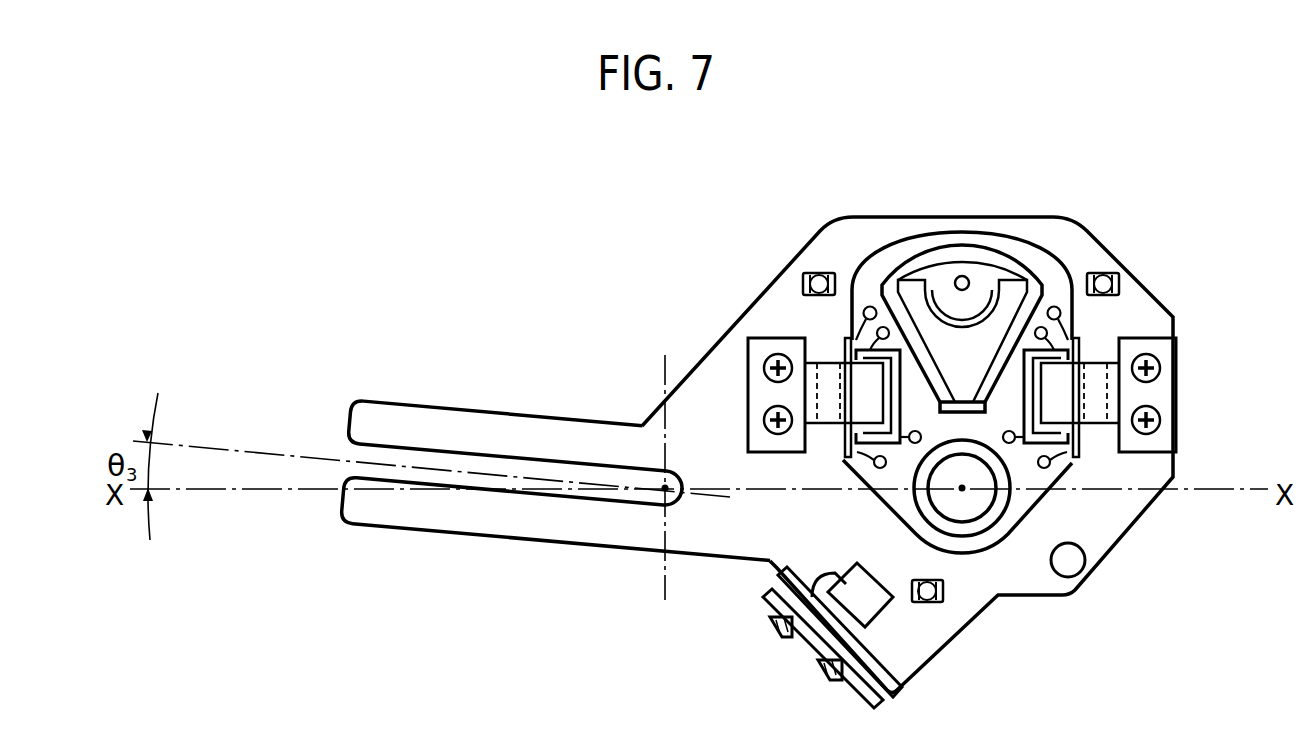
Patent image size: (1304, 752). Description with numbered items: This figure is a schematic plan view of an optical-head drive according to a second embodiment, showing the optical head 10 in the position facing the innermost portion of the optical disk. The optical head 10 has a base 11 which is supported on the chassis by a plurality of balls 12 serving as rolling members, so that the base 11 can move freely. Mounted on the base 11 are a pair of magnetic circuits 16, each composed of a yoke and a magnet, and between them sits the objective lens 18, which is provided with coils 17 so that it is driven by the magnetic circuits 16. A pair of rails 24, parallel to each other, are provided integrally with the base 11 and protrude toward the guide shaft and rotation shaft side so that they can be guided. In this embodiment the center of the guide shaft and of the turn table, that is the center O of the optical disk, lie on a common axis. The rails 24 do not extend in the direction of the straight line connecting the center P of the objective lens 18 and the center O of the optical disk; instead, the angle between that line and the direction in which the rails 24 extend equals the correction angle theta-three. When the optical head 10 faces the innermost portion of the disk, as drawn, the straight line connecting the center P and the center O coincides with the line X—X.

The optical head 10 is at (902, 212).
The base 11 is at (990, 213).
The balls 12 is at (818, 272).
The magnetic circuits 16 is at (852, 393).
The coils 17 is at (853, 338).
The objective lens 18 is at (983, 500).
The rails 24 is at (413, 514).
The center of the objective lens P is at (963, 492).
The center of the optical disk O is at (663, 495).